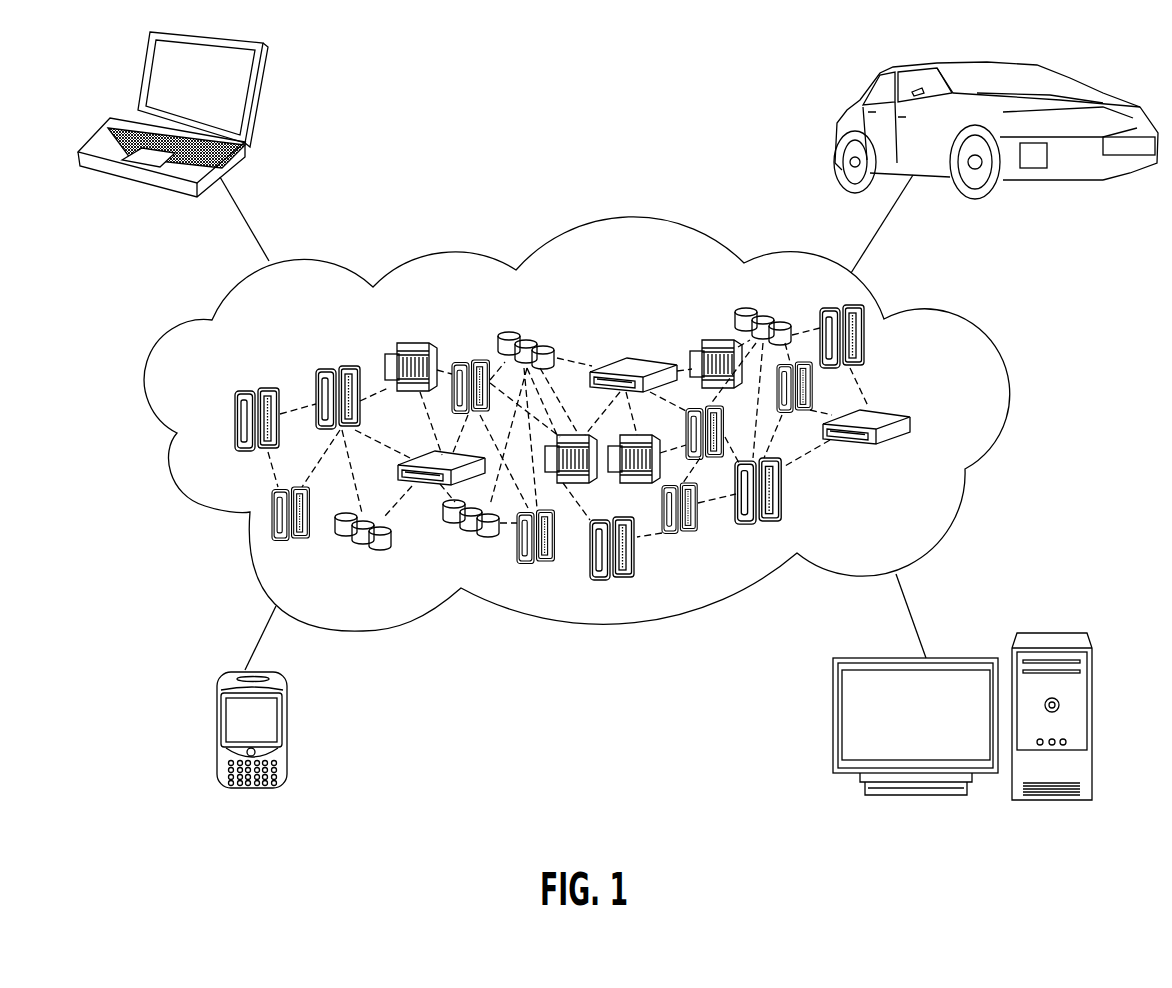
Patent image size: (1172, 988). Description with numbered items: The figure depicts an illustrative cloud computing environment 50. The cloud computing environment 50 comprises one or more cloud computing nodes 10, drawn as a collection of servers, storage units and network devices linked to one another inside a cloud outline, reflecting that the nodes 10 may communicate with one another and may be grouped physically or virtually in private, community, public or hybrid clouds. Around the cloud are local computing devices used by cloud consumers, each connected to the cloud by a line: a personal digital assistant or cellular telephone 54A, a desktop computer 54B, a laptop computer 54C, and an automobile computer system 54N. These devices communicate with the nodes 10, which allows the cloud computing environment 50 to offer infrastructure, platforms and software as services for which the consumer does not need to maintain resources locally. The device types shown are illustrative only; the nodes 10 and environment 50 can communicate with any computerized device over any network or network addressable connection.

The cloud computing nodes 10 is at (947, 418).
The cloud computing environment 50 is at (975, 333).
The personal digital assistant (PDA) or cellular telephone 54A is at (217, 735).
The desktop computer 54B is at (1055, 633).
The laptop computer 54C is at (257, 100).
The automobile computer system 54N is at (843, 112).